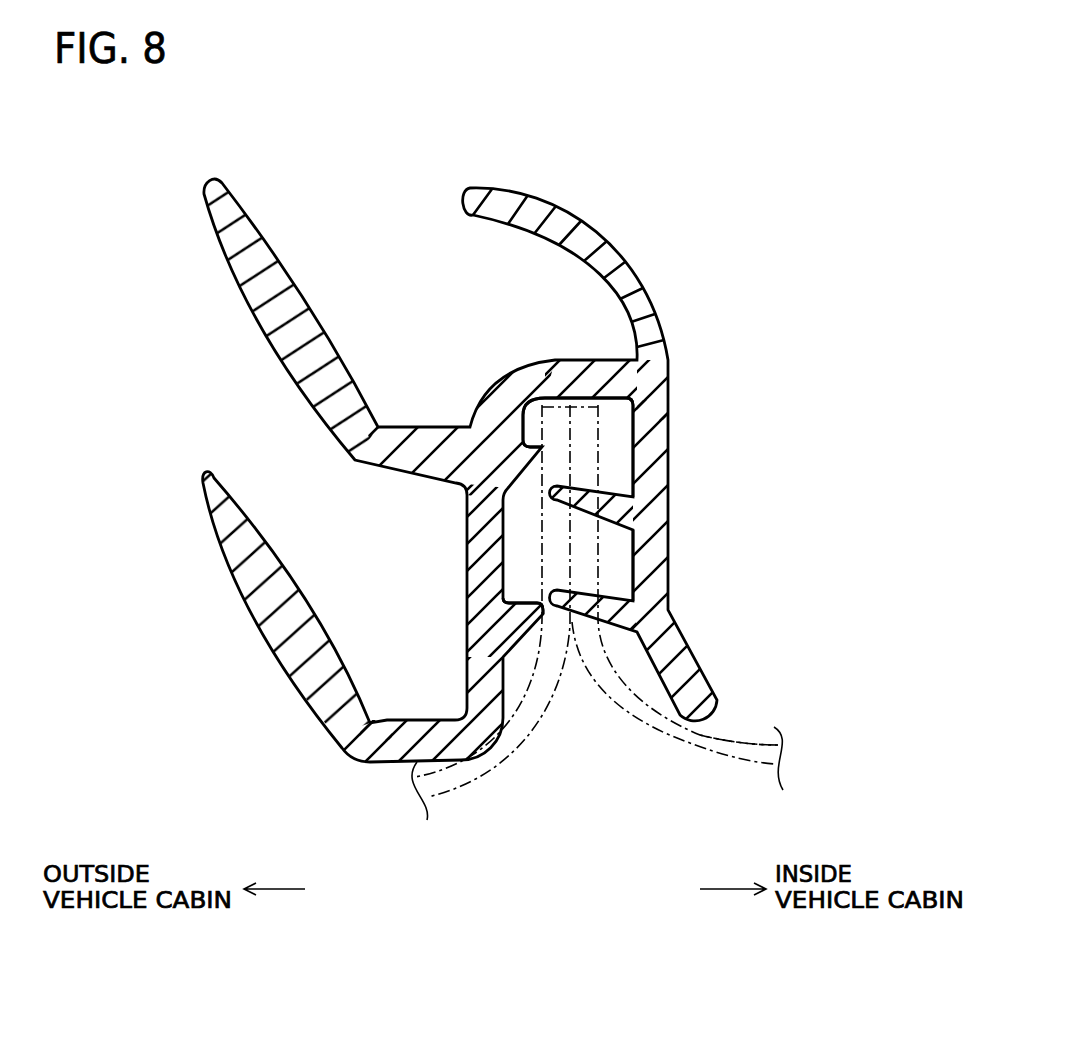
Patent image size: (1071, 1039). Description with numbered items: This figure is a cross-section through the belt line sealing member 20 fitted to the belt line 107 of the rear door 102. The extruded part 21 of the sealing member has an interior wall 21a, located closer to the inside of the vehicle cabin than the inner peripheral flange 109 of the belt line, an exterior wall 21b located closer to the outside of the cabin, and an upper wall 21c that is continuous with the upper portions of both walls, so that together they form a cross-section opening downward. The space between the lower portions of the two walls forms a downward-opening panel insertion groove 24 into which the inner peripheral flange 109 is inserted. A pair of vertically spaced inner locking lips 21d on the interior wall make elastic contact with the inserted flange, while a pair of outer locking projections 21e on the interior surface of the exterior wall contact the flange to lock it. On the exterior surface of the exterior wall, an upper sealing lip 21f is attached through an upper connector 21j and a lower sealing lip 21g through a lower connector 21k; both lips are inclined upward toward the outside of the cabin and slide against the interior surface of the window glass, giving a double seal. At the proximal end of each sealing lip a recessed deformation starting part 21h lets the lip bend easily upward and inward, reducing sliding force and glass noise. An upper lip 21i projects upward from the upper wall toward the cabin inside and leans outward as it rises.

The belt line sealing member 20 is at (674, 515).
The extruded part 21 is at (240, 310).
The interior wall 21a is at (670, 580).
The exterior wall 21b is at (466, 517).
The upper wall 21c is at (577, 358).
The inner locking lips 21d is at (553, 490).
The outer locking projections 21e is at (547, 447).
The upper sealing lip 21f is at (210, 220).
The lower sealing lip 21g is at (205, 500).
The deformation starting part 21h is at (379, 426).
The upper lip 21i is at (546, 198).
The upper connector 21j is at (430, 445).
The lower connector 21k is at (430, 750).
The panel insertion groove 24 is at (500, 688).
The rear door 102 is at (735, 762).
The belt line 107 is at (600, 453).
The inner peripheral flange 109 is at (677, 597).